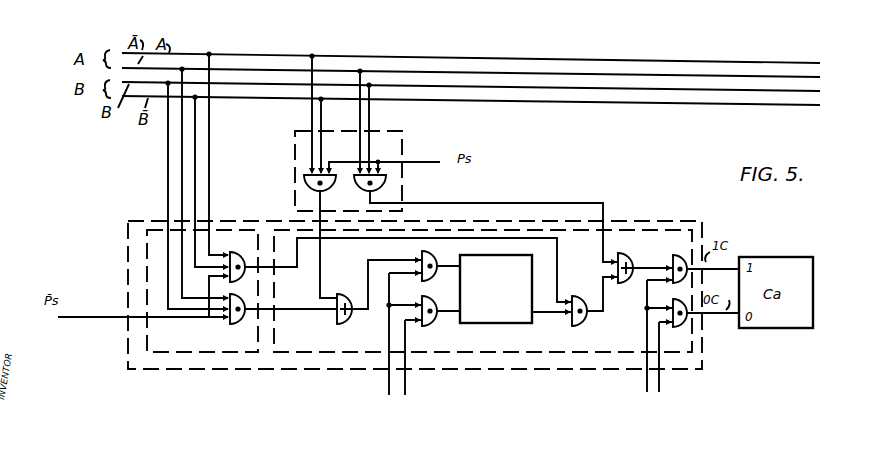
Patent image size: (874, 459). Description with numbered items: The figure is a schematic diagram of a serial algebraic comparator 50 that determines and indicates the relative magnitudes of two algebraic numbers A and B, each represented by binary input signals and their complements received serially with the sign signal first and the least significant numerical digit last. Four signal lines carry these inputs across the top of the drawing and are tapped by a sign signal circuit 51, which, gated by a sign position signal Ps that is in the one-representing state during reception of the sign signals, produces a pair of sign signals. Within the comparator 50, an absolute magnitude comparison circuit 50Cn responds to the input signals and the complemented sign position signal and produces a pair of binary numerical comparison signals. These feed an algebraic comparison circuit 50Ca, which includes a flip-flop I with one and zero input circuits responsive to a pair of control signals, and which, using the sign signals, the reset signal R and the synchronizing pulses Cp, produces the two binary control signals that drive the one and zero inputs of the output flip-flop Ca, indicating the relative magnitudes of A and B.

The algebraic comparator 50 is at (650, 222).
The sign signal circuit 51 is at (300, 149).
The absolute magnitude comparison circuit 50Cn is at (157, 258).
The algebraic comparison circuit 50Ca is at (538, 347).